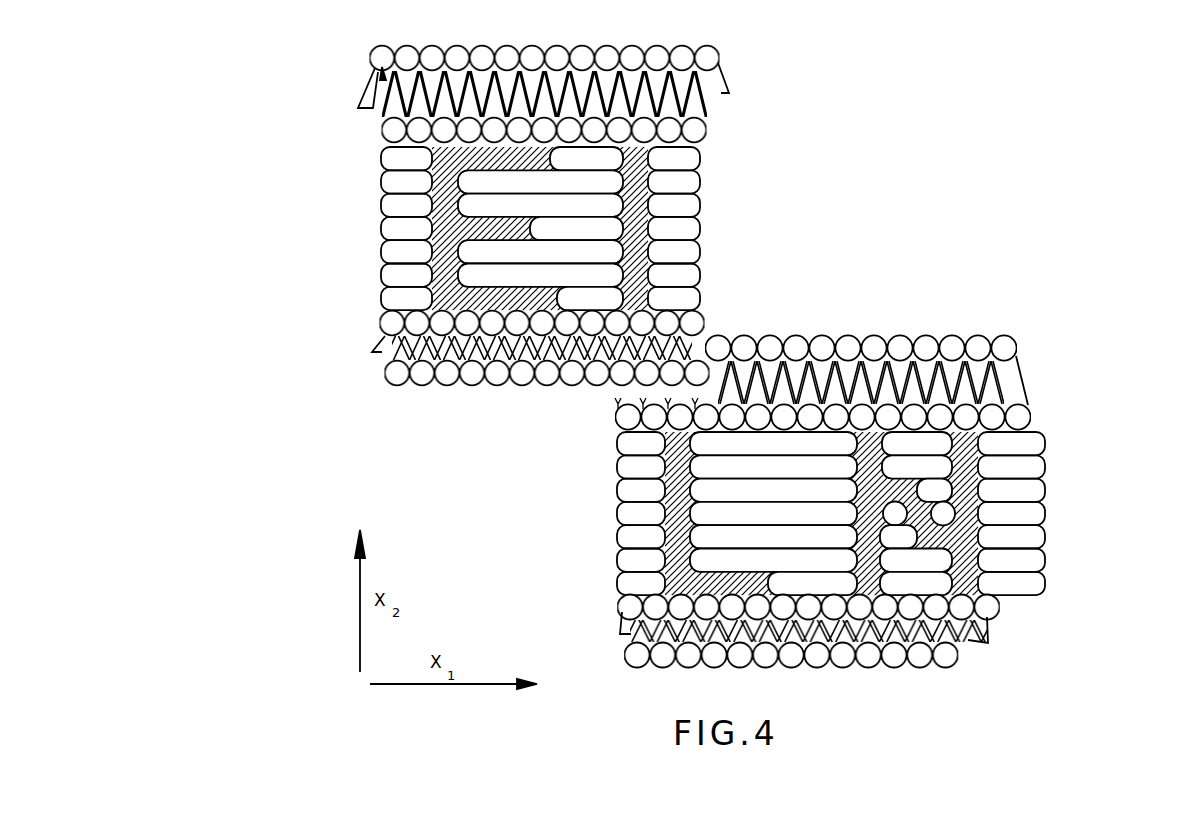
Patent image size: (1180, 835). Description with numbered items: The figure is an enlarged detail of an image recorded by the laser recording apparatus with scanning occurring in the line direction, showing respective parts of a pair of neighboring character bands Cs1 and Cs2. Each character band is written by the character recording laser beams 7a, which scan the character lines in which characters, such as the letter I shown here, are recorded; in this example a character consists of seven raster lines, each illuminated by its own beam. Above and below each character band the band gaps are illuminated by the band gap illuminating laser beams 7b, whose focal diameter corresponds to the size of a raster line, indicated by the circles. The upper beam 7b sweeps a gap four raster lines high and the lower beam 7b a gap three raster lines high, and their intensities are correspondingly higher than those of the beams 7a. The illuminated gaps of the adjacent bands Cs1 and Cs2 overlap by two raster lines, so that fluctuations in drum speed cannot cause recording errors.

The character recording laser beams 7a is at (341, 148).
The band gap illuminating laser beams 7b is at (700, 355).
The first character band Cs1 is at (708, 219).
The second character band Cs2 is at (1099, 335).